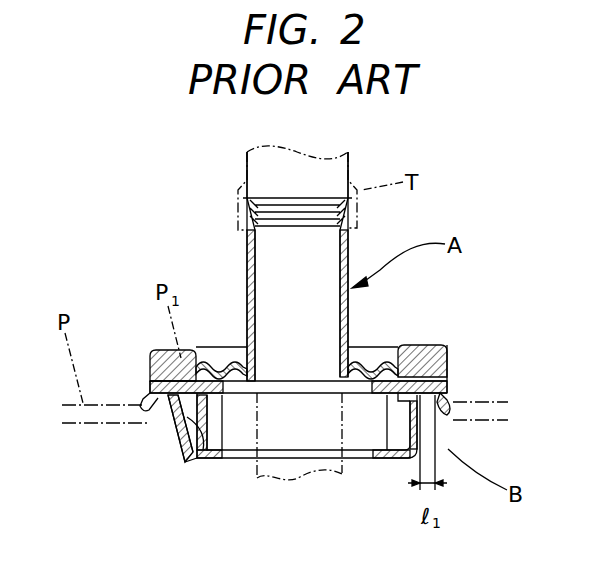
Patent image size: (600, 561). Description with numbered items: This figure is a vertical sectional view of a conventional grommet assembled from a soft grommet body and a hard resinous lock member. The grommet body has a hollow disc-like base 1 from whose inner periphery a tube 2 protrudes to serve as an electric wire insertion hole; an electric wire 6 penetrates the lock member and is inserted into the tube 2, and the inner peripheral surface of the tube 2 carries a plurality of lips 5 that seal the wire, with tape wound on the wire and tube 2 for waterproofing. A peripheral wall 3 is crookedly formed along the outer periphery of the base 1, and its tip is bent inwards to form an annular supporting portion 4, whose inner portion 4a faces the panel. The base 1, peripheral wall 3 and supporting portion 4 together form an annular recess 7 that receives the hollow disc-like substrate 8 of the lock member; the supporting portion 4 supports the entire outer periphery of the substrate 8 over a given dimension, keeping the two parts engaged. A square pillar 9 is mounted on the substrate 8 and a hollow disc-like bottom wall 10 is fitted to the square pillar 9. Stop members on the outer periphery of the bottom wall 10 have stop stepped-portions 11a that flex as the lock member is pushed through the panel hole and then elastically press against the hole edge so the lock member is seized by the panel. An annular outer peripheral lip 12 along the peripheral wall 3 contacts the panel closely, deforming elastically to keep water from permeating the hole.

The base 1 is at (418, 342).
The tube 2 is at (347, 320).
The peripheral wall 3 is at (448, 378).
The supporting portion 4 is at (443, 441).
The flange block portion 4a is at (168, 358).
The lips 5 is at (262, 190).
The electric wire 6 is at (345, 172).
The annular recess 7 is at (160, 418).
The substrate 8 is at (188, 463).
The square pillar 9 is at (438, 449).
The bottom wall 10 is at (382, 462).
The stop stepped-portion 11a is at (160, 432).
The outer peripheral lip 12 is at (451, 412).